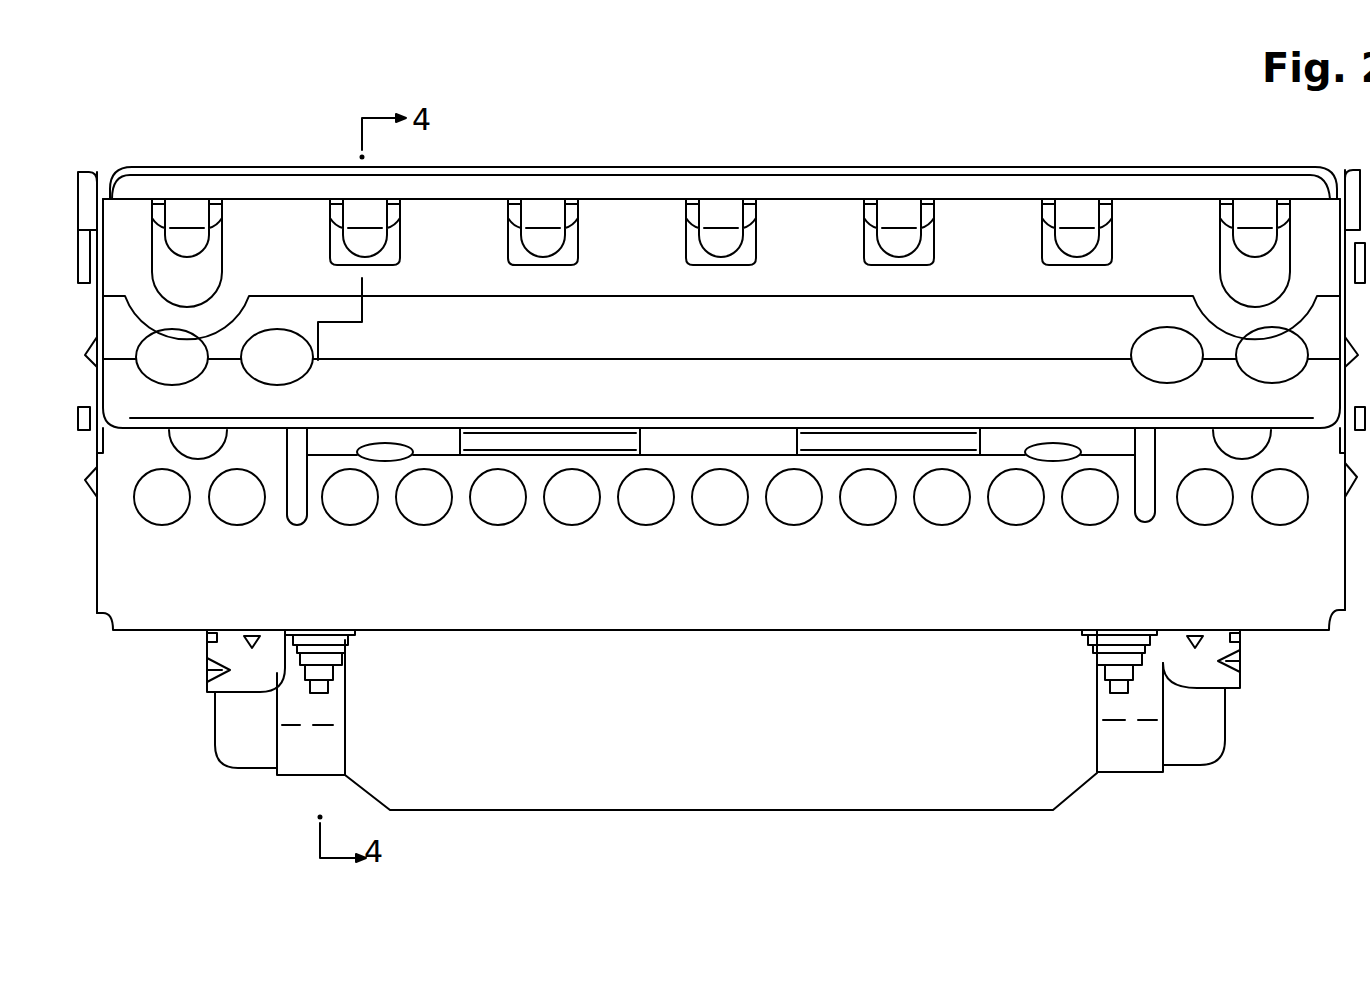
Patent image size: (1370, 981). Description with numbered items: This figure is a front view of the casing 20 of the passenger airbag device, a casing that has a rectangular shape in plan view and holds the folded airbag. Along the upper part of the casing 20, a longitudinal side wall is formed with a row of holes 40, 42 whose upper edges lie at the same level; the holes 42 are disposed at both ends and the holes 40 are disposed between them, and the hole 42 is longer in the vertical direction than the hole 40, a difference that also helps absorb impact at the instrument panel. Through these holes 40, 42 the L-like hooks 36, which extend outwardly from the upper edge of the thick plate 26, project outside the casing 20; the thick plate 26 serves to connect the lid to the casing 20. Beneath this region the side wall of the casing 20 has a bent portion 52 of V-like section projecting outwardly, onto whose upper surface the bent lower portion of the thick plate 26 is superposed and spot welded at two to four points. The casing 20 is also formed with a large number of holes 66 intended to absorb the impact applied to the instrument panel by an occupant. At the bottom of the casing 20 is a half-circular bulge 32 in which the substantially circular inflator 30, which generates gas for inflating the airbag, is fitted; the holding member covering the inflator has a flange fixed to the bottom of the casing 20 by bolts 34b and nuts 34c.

The casing 20 is at (148, 632).
The thick plate 26 is at (948, 328).
The inflator 30 is at (243, 753).
The bulge 32 is at (782, 797).
The bolt 34b is at (322, 690).
The nut 34c is at (338, 653).
The L-like hook 36 is at (187, 212).
The hole 40 is at (384, 262).
The hole 42 is at (222, 272).
The bent portion 52 is at (760, 440).
The hole 66 is at (570, 507).